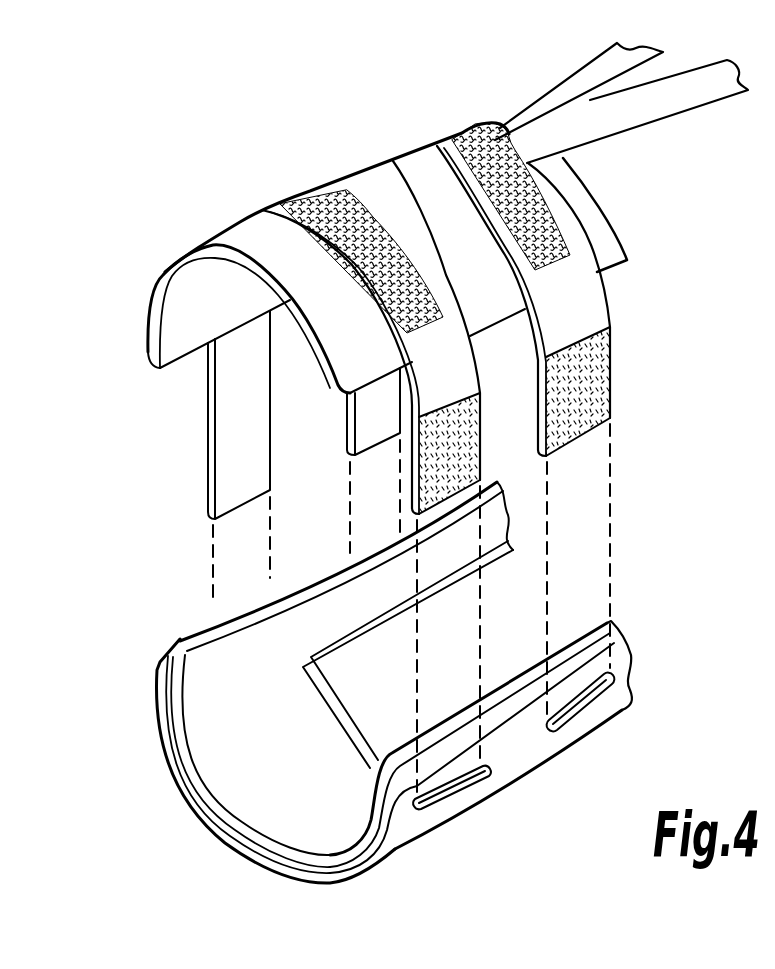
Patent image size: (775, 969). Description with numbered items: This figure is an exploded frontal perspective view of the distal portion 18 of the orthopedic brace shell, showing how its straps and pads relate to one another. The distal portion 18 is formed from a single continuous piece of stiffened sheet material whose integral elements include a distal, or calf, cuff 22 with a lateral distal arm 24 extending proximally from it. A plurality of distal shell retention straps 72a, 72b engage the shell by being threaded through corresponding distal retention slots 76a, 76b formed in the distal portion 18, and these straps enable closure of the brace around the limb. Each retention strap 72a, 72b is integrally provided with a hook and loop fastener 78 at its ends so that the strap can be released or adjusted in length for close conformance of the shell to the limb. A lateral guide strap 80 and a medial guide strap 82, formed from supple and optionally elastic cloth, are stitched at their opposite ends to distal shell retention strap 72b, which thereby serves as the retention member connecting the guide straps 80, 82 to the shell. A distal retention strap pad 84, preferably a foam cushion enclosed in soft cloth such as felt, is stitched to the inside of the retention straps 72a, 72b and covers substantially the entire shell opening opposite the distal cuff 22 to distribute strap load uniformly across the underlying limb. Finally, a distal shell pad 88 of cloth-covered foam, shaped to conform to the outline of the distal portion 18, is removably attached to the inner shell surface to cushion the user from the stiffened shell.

The distal portion 18 is at (440, 827).
The distal cuff 22 is at (398, 845).
The lateral distal arm 24 is at (624, 705).
The distal shell retention strap 72a is at (471, 351).
The distal shell retention strap 72b is at (602, 300).
The distal retention slot 76a is at (477, 780).
The distal retention slot 76b is at (567, 713).
The hook and loop fastener 78 is at (210, 508).
The lateral guide strap 80 is at (663, 108).
The medial guide strap 82 is at (553, 100).
The distal retention strap pad 84 is at (371, 190).
The distal shell pad 88 is at (193, 652).